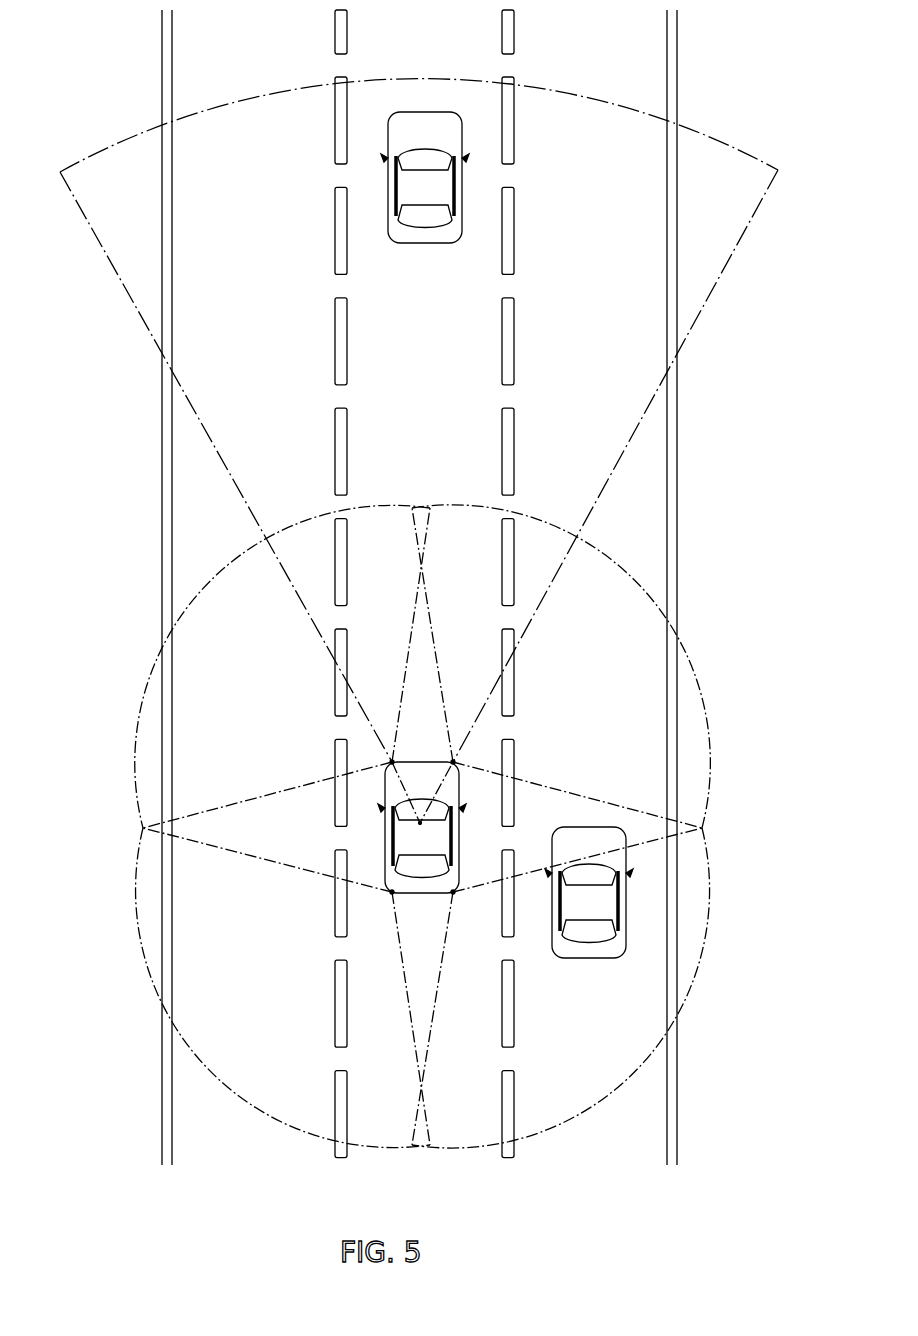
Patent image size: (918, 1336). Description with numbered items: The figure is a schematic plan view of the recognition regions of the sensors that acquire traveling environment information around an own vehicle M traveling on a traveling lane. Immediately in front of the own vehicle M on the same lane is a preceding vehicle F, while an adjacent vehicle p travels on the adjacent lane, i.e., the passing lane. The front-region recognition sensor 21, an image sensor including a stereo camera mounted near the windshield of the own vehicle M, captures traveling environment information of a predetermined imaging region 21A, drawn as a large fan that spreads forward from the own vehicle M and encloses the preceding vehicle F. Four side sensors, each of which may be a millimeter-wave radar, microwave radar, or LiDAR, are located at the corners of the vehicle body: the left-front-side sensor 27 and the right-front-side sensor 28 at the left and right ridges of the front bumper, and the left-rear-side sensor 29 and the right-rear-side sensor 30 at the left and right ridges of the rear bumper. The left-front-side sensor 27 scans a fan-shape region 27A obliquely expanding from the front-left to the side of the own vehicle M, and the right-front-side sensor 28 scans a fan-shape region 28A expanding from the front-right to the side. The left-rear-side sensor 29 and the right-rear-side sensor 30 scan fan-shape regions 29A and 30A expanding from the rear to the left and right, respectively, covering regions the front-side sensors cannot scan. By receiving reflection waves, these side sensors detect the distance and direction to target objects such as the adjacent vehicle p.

The front-region recognition sensor 21 is at (421, 825).
The imaging region 21A is at (650, 410).
The left-front-side sensor 27 is at (392, 762).
The right-front-side sensor 28 is at (453, 762).
The left-rear-side sensor 29 is at (392, 892).
The right-rear-side sensor 30 is at (453, 892).
The fan-shape region 27A is at (135, 739).
The fan-shape region 28A is at (710, 737).
The fan-shape region 29A is at (242, 1096).
The fan-shape region 30A is at (710, 912).
The own vehicle M is at (423, 893).
The preceding vehicle F is at (412, 112).
The adjacent vehicle p is at (582, 827).